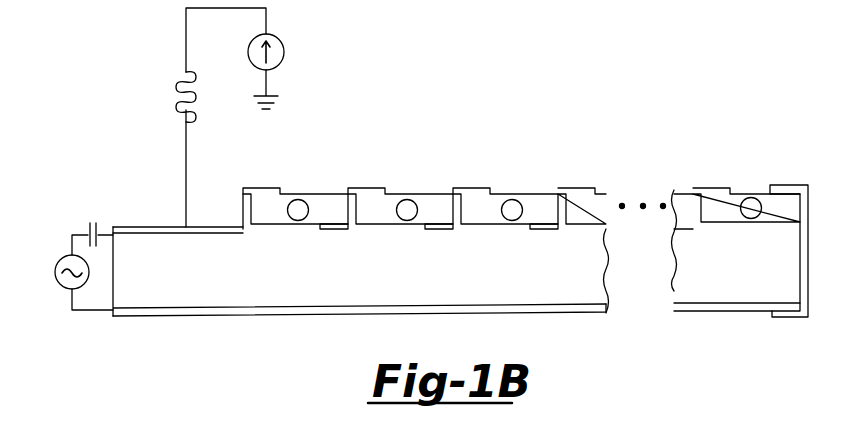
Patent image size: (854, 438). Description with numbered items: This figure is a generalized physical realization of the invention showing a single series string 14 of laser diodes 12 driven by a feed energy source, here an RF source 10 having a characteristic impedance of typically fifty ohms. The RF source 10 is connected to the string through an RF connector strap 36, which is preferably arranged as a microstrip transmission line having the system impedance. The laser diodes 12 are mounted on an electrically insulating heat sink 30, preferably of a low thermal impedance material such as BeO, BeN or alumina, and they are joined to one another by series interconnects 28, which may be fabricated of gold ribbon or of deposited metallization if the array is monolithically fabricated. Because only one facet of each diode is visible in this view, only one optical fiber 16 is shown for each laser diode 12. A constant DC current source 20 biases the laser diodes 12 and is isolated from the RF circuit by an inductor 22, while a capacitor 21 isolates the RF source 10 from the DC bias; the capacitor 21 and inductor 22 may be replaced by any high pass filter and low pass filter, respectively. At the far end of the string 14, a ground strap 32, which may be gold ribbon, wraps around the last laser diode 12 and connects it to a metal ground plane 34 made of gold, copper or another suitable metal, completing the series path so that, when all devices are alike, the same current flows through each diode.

The RF source 10 is at (62, 289).
The laser diode 12 is at (422, 192).
The series string 14 is at (504, 183).
The optical fiber 16 is at (298, 221).
The constant DC current source 20 is at (283, 50).
The capacitor 21 is at (97, 222).
The inductor 22 is at (182, 90).
The series interconnect 28 is at (337, 232).
The heat sink 30 is at (183, 283).
The ground strap 32 is at (793, 315).
The metal ground plane 34 is at (543, 311).
The RF connector strap 36 is at (212, 233).